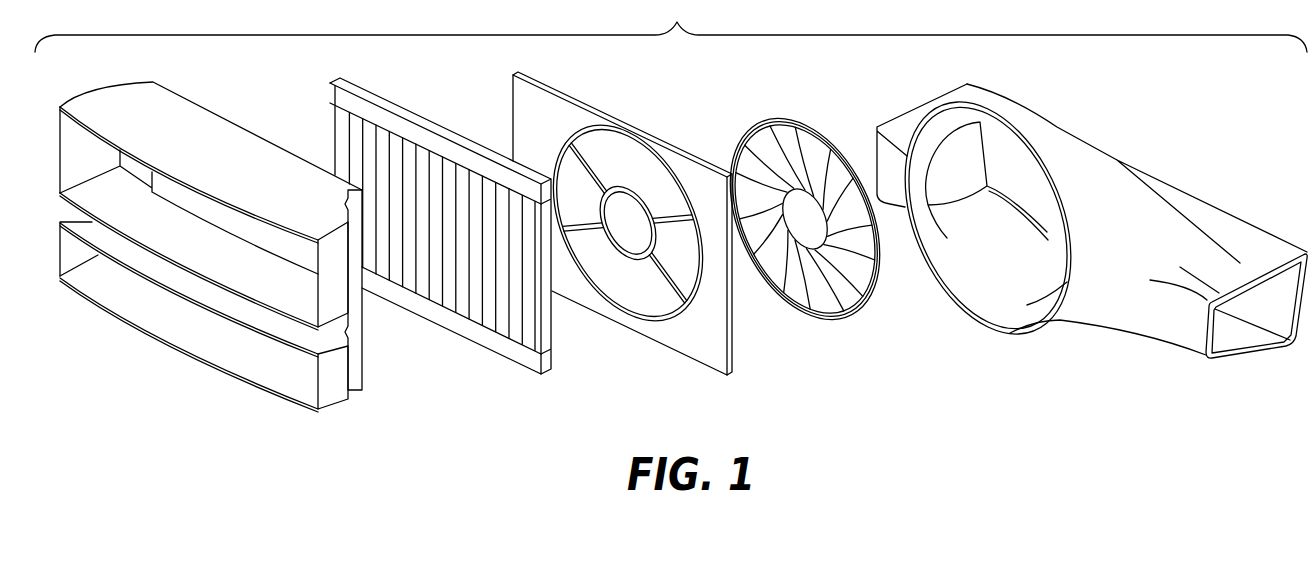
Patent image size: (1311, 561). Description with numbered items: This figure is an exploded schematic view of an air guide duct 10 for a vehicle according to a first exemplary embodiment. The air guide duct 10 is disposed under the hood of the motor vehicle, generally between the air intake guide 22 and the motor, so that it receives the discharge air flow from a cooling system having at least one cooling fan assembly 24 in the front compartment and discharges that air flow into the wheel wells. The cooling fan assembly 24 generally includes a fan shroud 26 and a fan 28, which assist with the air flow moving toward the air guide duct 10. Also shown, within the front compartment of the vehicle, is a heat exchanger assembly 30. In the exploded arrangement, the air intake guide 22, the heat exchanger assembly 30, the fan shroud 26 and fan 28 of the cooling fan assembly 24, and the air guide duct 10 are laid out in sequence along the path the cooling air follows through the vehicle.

The air guide duct 10 is at (1053, 137).
The air intake guide 22 is at (330, 382).
The cooling fan assembly 24 is at (716, 256).
The fan shroud 26 is at (730, 337).
The fan 28 is at (825, 220).
The heat exchanger assembly 30 is at (463, 342).